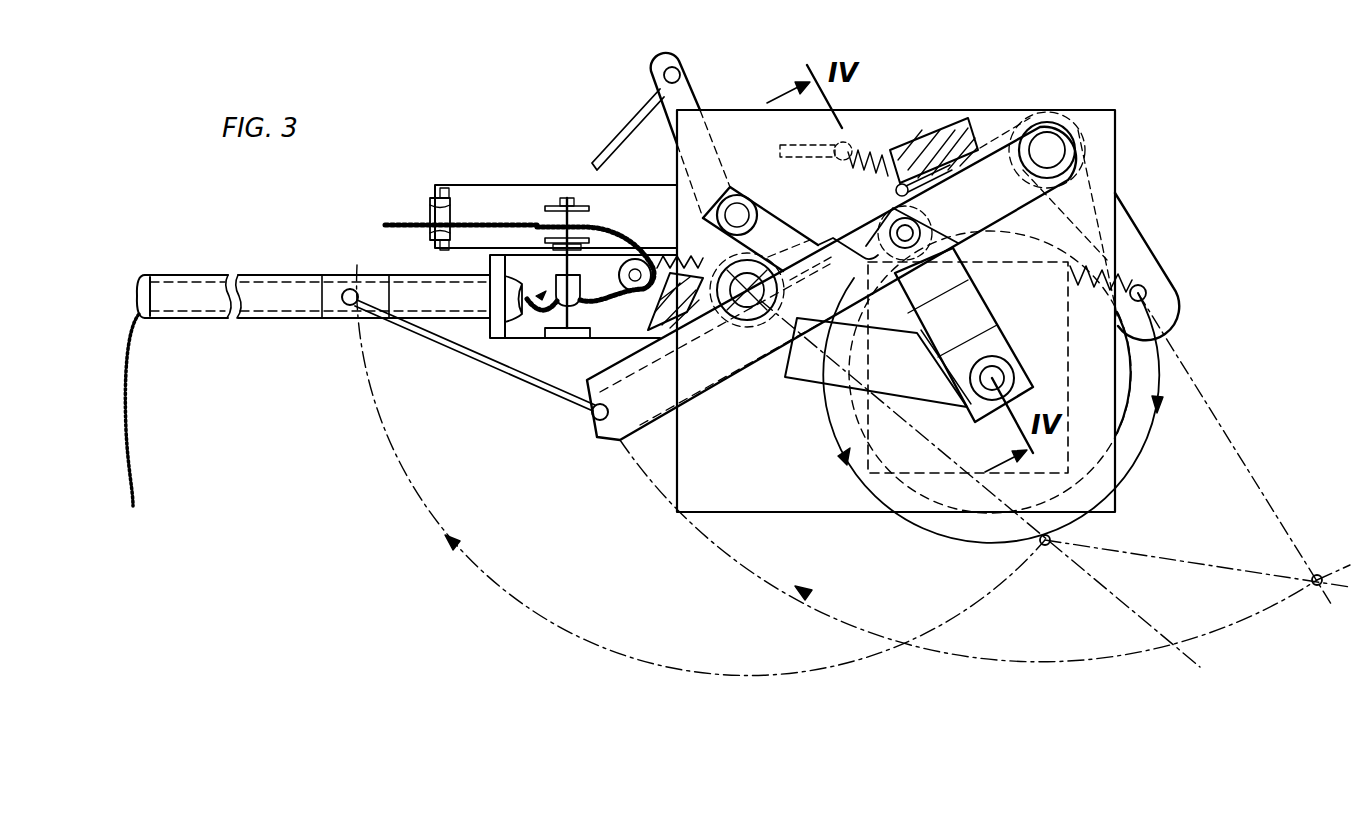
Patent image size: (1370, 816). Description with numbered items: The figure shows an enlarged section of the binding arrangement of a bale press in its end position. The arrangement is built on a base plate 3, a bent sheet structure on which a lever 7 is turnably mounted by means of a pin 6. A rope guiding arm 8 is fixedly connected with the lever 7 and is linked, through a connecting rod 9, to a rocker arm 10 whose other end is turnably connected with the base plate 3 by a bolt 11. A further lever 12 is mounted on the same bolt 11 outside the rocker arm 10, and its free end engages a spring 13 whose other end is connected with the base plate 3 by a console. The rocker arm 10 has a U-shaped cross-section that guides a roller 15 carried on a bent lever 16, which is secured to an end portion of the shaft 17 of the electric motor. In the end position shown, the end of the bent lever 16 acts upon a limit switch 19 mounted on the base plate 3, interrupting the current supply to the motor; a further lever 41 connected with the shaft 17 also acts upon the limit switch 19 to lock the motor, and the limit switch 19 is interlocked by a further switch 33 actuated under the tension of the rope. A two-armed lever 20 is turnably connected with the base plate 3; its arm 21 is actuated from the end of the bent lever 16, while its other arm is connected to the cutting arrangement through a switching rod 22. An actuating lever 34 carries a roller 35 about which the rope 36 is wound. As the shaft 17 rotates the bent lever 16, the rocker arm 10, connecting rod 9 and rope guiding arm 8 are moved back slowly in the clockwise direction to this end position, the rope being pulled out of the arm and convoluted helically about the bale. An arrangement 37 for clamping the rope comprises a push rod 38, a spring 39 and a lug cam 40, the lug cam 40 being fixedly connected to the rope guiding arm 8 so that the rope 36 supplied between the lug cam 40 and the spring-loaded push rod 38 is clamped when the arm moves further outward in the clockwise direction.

The base plate 3 is at (744, 497).
The pin 6 is at (728, 272).
The lever 7 is at (517, 332).
The rope guiding arm 8 is at (287, 318).
The connecting rod 9 is at (495, 388).
The rocker arm 10 is at (638, 410).
The bolt 11 is at (1065, 178).
The lever 12 is at (1158, 258).
The spring 13 is at (877, 150).
The roller 15 is at (880, 228).
The bent lever 16 is at (978, 305).
The shaft 17 is at (1000, 375).
The limit switch 19 is at (945, 150).
The two-armed lever 20 is at (690, 58).
The arm 21 is at (775, 228).
The switching rod 22 is at (635, 112).
The switch 33 is at (678, 330).
The actuating lever 34 is at (648, 260).
The roller 35 is at (615, 255).
The rope 36 is at (478, 222).
The arrangement for clamping the rope 37 is at (510, 298).
The push rod 38 is at (597, 305).
The spring 39 is at (556, 204).
The lug cam 40 is at (568, 338).
The lever 41 is at (800, 376).